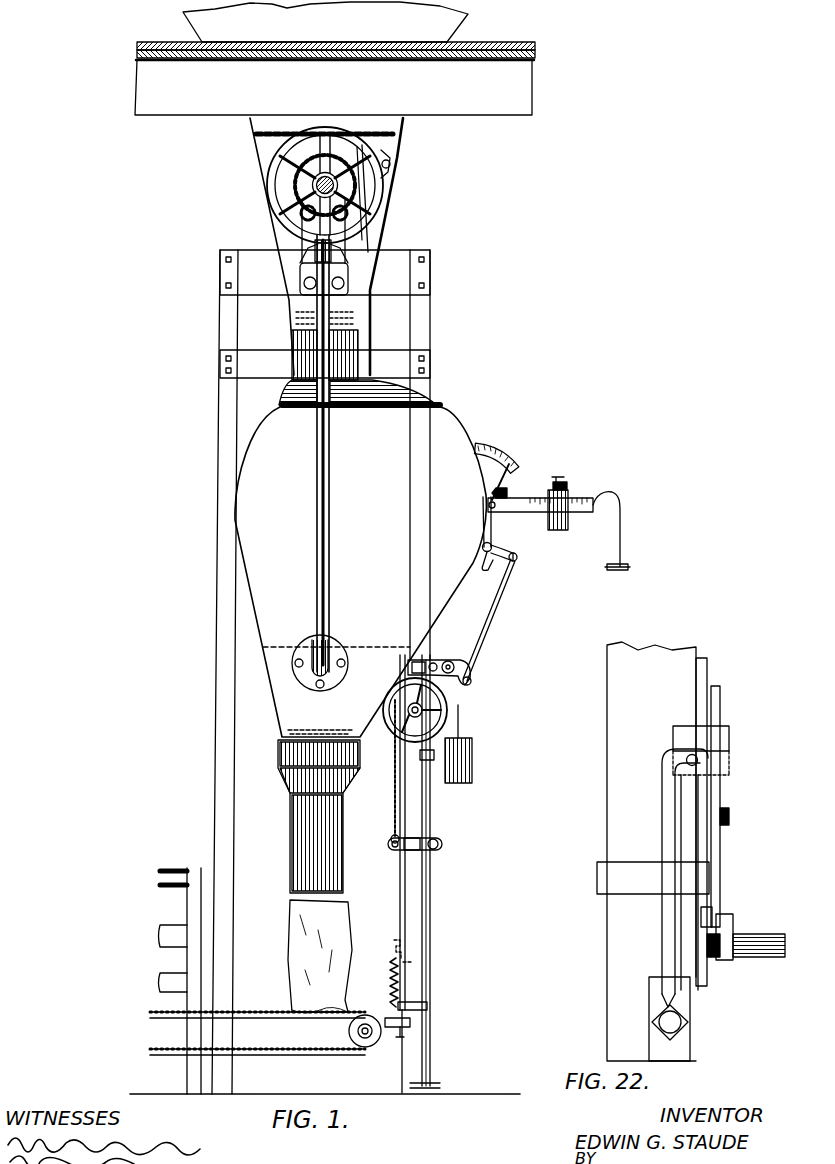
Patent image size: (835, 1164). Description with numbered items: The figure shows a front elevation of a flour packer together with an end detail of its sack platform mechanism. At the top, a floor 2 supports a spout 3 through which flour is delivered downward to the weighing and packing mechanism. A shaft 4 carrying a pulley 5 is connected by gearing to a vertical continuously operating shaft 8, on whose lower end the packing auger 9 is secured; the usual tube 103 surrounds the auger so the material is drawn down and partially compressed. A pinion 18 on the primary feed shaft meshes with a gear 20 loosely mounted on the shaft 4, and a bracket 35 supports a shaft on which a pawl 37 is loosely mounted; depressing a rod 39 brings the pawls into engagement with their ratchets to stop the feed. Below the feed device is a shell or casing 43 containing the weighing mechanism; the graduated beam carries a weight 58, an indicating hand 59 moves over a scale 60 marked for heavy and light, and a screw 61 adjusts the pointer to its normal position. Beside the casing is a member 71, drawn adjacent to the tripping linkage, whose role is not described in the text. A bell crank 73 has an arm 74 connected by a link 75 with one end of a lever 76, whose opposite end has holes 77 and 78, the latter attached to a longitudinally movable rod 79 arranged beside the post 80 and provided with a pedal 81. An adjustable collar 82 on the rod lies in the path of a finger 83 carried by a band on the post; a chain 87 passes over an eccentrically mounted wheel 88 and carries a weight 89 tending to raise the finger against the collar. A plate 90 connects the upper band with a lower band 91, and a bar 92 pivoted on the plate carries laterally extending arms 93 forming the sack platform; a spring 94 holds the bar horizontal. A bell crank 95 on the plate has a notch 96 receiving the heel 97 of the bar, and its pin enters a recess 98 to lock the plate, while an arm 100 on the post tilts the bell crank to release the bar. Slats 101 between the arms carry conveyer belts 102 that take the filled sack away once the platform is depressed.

In FIG. 1, the floor 2 is at (548, 52).
In FIG. 1, the spout 3 is at (197, 150).
In FIG. 1, the shaft 4 is at (298, 182).
In FIG. 1, the pulley 5 is at (383, 150).
In FIG. 1, the vertical continuously operating shaft 8 is at (342, 292).
In FIG. 1, the packing auger 9 is at (300, 900).
In FIG. 1, the pinion 18 is at (317, 225).
In FIG. 1, the gear 20 is at (340, 188).
In FIG. 1, the bracket 35 is at (380, 234).
In FIG. 1, the pawl 37 is at (391, 163).
In FIG. 1, the rod 39 is at (372, 280).
In FIG. 1, the shell or casing 43 is at (360, 533).
In FIG. 1, the weight 58 is at (556, 530).
In FIG. 1, the indicating hand 59 is at (490, 482).
In FIG. 1, the scale 60 is at (497, 449).
In FIG. 1, the screw 61 is at (509, 492).
In FIG. 1, the scale beam 71 is at (559, 531).
In FIG. 1, the bell crank 73 is at (492, 528).
In FIG. 1, the arm 74 is at (509, 553).
In FIG. 1, the link 75 is at (512, 576).
In FIG. 1, the lever 76 is at (470, 669).
In FIG. 1, the hole 77 is at (434, 663).
In FIG. 1, the hole 78 is at (462, 656).
In FIG. 1, the longitudinally movable rod 79 is at (432, 800).
In FIG. 1, the post 80 is at (420, 820).
In FIG. 22, the post 80 is at (651, 851).
In FIG. 1, the pedal 81 is at (325, 981).
In FIG. 1, the adjustable collar 82 is at (421, 757).
In FIG. 1, the finger 83 is at (442, 845).
In FIG. 1, the chain 87 is at (392, 795).
In FIG. 1, the eccentrically mounted wheel 88 is at (448, 710).
In FIG. 1, the weight 89 is at (473, 765).
In FIG. 1, the plate 90 is at (400, 912).
In FIG. 22, the plate 90 is at (704, 860).
In FIG. 1, the band 91 is at (427, 1006).
In FIG. 22, the band 91 is at (653, 878).
In FIG. 1, the bar 92 is at (400, 1030).
In FIG. 22, the bar 92 is at (733, 924).
In FIG. 22, the laterally extending arms 93 is at (760, 957).
In FIG. 1, the spring 94 is at (390, 985).
In FIG. 22, the bell crank 95 is at (722, 790).
In FIG. 22, the notch 96 is at (712, 912).
In FIG. 22, the heel 97 is at (680, 740).
In FIG. 22, the recess 98 is at (699, 761).
In FIG. 22, the arm 100 is at (664, 812).
In FIG. 1, the slats 101 is at (265, 1018).
In FIG. 1, the conveyer belts 102 is at (326, 1055).
In FIG. 1, the tube 103 is at (343, 835).